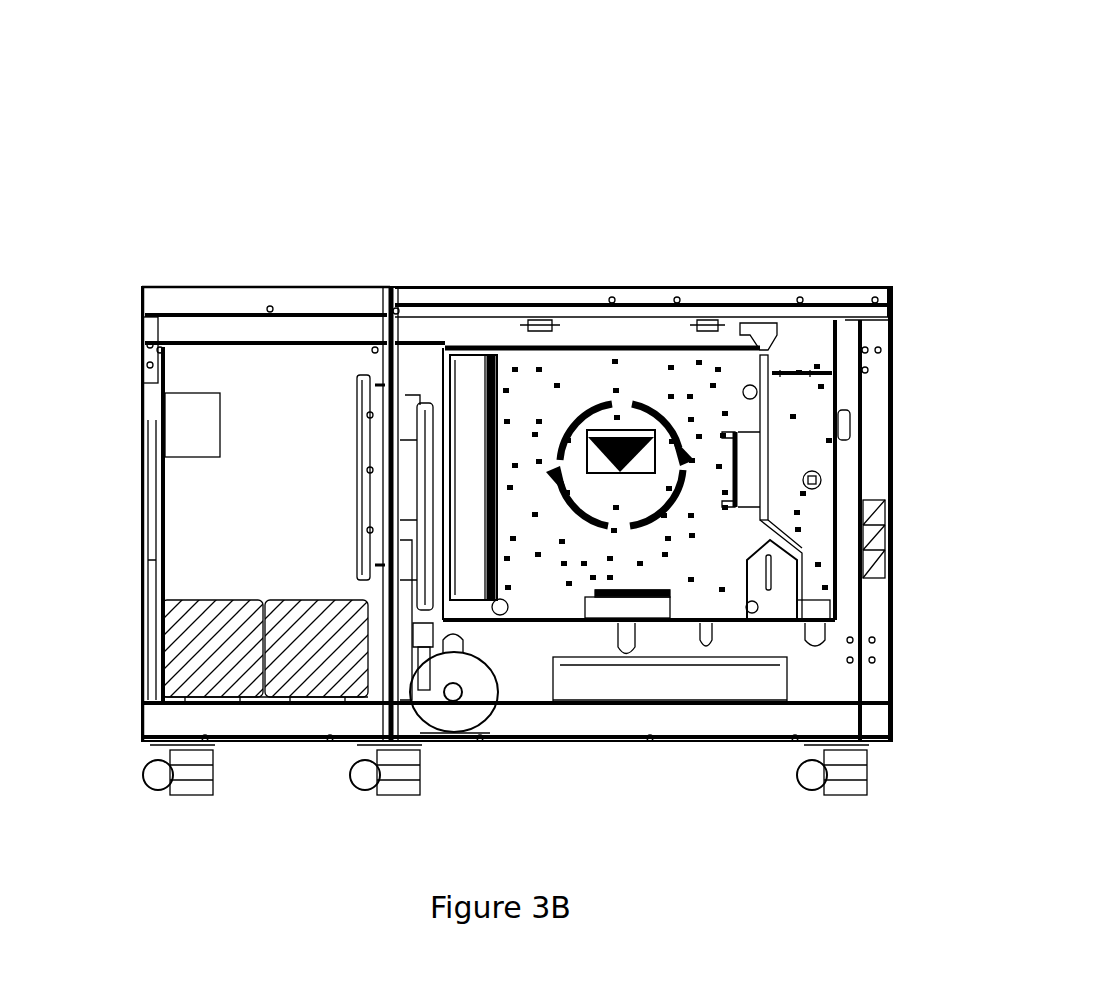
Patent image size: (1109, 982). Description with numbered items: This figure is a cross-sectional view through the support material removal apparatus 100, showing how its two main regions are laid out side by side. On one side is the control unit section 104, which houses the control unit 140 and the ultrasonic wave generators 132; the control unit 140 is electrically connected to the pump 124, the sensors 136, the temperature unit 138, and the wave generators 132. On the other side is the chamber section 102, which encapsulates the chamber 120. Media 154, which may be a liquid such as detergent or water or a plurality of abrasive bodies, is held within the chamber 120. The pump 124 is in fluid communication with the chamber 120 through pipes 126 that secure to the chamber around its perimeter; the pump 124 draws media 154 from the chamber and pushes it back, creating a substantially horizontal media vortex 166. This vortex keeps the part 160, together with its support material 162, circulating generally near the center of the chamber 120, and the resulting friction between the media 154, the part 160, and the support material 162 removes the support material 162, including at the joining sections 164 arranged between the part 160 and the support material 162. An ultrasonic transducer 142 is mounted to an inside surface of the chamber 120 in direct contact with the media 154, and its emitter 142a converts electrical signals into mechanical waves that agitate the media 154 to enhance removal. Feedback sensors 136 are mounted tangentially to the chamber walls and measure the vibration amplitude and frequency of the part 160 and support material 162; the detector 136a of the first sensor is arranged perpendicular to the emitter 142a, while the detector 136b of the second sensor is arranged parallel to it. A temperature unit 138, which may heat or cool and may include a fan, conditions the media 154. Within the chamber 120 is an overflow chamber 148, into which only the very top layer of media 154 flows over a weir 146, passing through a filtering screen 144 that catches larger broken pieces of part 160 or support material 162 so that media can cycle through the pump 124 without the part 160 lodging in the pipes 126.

The support material removal apparatus 100 is at (312, 168).
The chamber section 102 is at (588, 284).
The control unit section 104 is at (247, 280).
The chamber 120 is at (733, 627).
The pump 124 is at (423, 727).
The pipes 126 is at (413, 402).
The ultrasonic wave generators 132 is at (178, 700).
The feedback sensors 136 is at (771, 460).
The detector of first sensor 136a is at (644, 600).
The detector of second sensor 136b is at (745, 486).
The temperature unit 138 is at (896, 520).
The control unit 140 is at (164, 377).
The ultrasonic transducer 142 is at (478, 349).
The emitter 142a is at (481, 573).
The filtering screen 144 is at (818, 357).
The weir 146 is at (774, 337).
The overflow chamber 148 is at (820, 548).
The media 154 is at (711, 405).
The part 160 is at (634, 421).
The support material 162 is at (598, 480).
The joining section 164 is at (652, 446).
The media vortex 166 is at (575, 394).